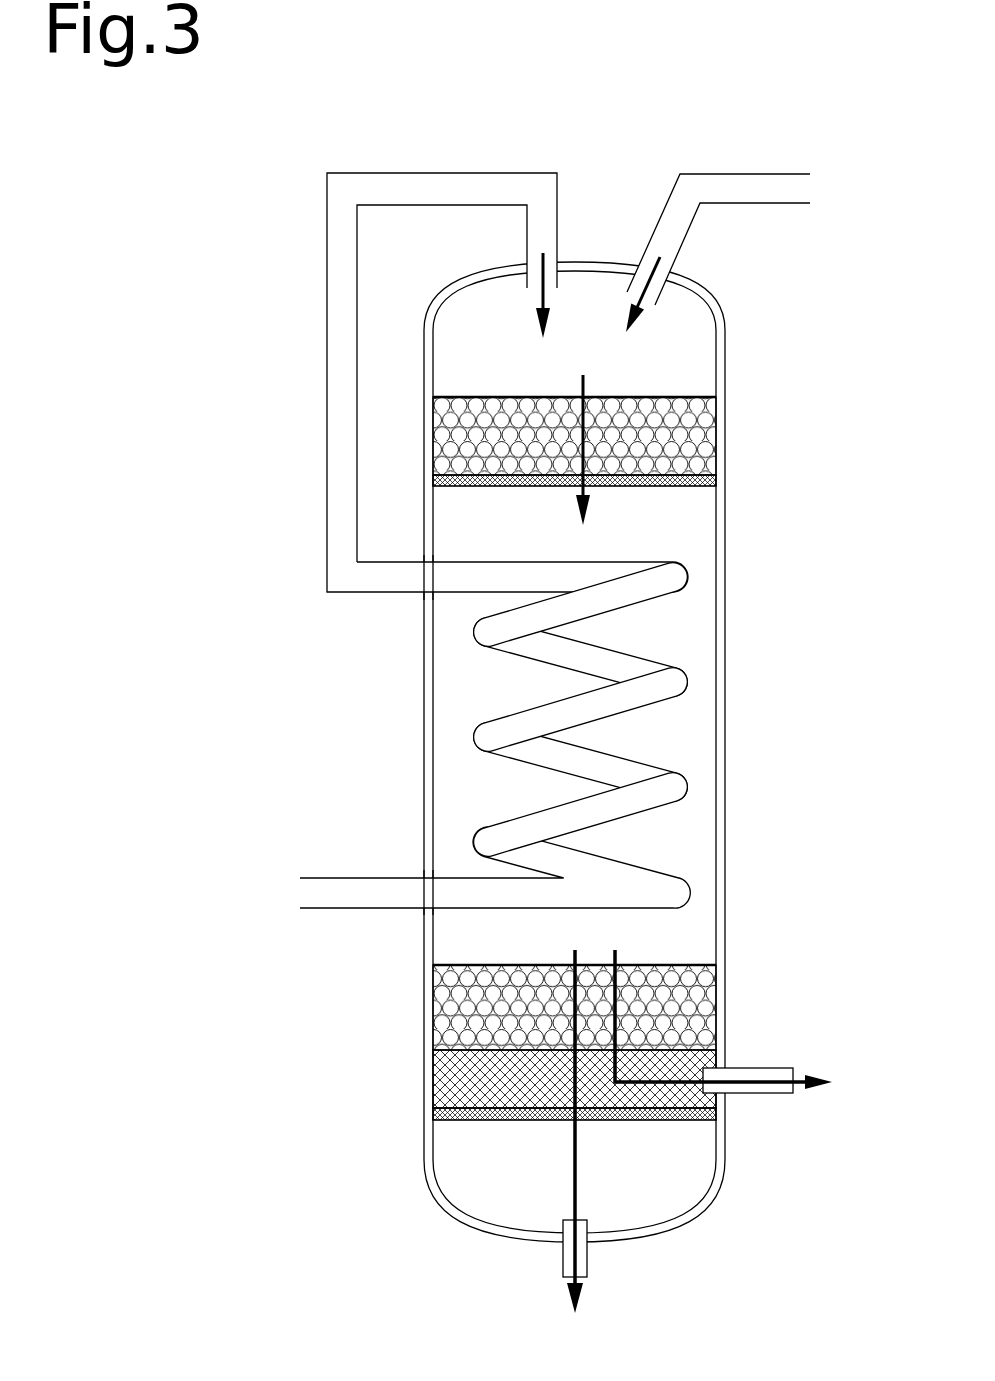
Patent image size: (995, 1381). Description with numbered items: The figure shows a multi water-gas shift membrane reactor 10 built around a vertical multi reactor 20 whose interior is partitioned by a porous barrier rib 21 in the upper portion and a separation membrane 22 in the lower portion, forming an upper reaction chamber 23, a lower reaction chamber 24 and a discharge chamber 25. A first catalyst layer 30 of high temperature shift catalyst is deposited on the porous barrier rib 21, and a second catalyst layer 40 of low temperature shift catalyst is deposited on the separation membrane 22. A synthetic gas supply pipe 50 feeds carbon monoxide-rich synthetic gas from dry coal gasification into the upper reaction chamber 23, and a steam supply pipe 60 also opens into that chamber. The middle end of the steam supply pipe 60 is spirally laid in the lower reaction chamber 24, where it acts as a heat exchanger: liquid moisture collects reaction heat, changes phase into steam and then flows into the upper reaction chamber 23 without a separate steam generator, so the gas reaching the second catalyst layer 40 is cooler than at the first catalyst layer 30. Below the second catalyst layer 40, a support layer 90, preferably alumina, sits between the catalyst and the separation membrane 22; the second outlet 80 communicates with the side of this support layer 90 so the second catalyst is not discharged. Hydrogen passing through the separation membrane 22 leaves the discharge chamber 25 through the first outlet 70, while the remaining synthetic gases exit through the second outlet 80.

The multi water-gas shift membrane reactor 10 is at (872, 625).
The multi reactor 20 is at (725, 762).
The porous barrier rib 21 is at (677, 487).
The separation membrane 22 is at (503, 1117).
The upper reaction chamber 23 is at (675, 357).
The lower reaction chamber 24 is at (678, 941).
The discharge chamber 25 is at (677, 1192).
The first catalyst layer 30 is at (687, 432).
The second catalyst layer 40 is at (465, 1000).
The synthetic gas supply pipe 50 is at (748, 203).
The steam supply pipe 60 is at (463, 173).
The first outlet 70 is at (587, 1262).
The second outlet 80 is at (755, 1068).
The support layer 90 is at (465, 1075).